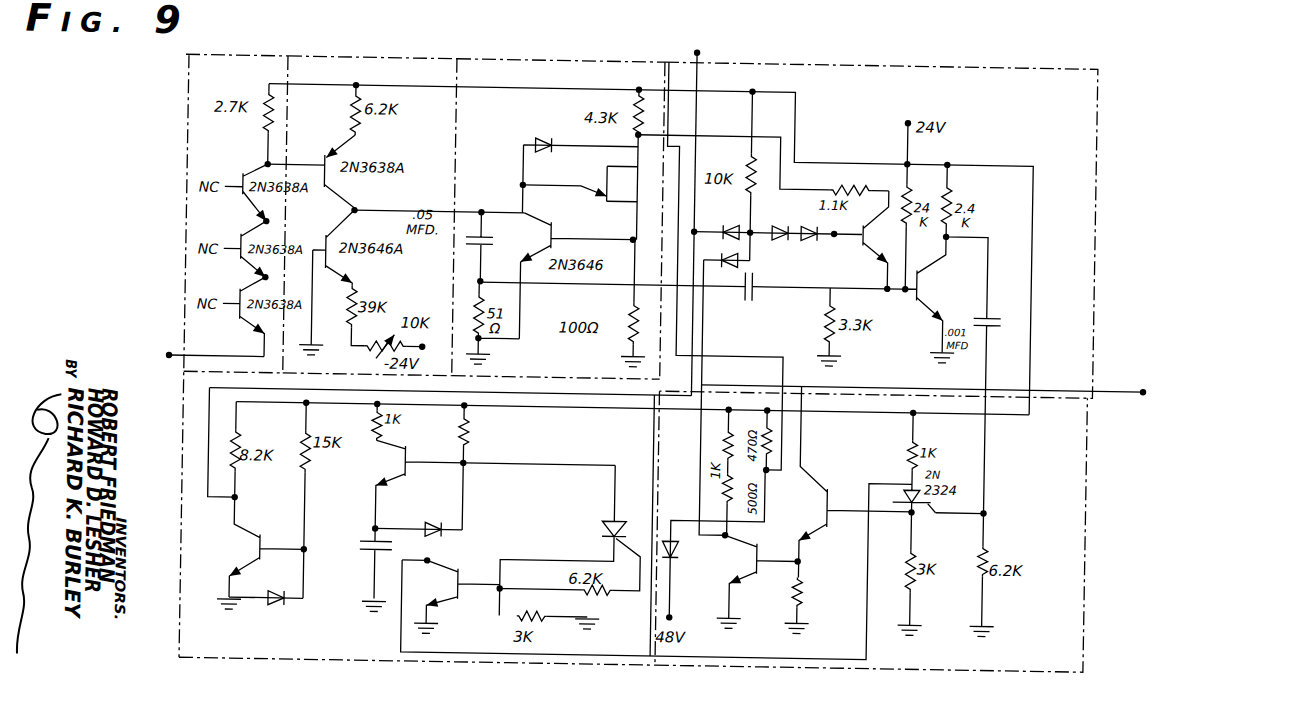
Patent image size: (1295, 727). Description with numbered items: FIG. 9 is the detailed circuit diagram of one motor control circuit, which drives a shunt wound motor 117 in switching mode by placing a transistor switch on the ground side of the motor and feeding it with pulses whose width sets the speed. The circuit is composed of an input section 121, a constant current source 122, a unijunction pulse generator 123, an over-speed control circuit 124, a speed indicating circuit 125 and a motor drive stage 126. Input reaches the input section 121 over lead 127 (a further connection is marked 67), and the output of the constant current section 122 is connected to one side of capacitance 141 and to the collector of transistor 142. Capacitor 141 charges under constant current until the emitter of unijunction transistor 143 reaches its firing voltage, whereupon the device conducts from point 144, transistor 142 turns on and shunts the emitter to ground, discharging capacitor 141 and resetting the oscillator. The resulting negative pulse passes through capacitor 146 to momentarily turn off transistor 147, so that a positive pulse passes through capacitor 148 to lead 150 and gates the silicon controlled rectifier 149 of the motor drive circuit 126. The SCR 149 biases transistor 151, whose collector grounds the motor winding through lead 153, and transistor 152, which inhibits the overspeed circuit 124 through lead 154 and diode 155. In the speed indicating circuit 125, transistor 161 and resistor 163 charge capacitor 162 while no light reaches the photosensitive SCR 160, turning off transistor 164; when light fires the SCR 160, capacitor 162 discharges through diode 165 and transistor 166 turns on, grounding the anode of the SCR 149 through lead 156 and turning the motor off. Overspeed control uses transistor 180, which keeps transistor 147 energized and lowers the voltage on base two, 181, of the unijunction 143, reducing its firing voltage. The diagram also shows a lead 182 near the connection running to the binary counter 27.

The input section 121 is at (200, 57).
The constant current source 122 is at (312, 68).
The unijunction pulse generator 123 is at (541, 70).
The over-speed control circuit 124 is at (1067, 237).
The speed indicating circuit 125 is at (195, 466).
The motor drive stage 126 is at (1072, 553).
The lead 127 is at (168, 362).
The conductor 67 is at (217, 457).
The capacitance 141 is at (482, 245).
The transistor 142 is at (545, 241).
The unijunction transistor 143 is at (610, 190).
The point 144 is at (634, 219).
The capacitor 146 is at (739, 292).
The transistor 147 is at (910, 298).
The capacitor 148 is at (992, 313).
The silicon controlled rectifier 149 is at (920, 514).
The lead 150 is at (989, 507).
The transistor 151 is at (828, 528).
The transistor 152 is at (770, 578).
The lead 153 is at (1119, 387).
The lead 154 is at (702, 471).
The diode 155 is at (748, 260).
The lead 156 is at (871, 574).
The photosensitive silicon controlled rectifier 160 is at (618, 520).
The transistor 161 is at (409, 452).
The capacitor 162 is at (375, 530).
The resistor 163 is at (467, 447).
The transistor 164 is at (265, 552).
The diode 165 is at (428, 530).
The transistor 166 is at (456, 604).
The transistor 180 is at (868, 220).
The base two 181 is at (633, 155).
The conductor 182 is at (697, 81).
The binary counter 27 is at (776, 41).
The shunt wound motor 117 is at (1199, 402).